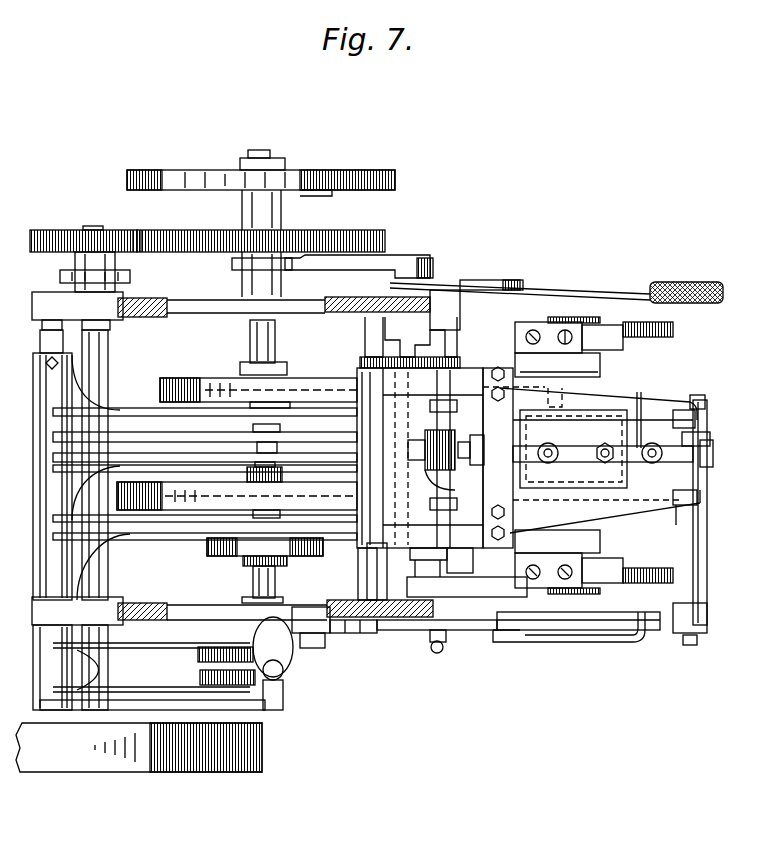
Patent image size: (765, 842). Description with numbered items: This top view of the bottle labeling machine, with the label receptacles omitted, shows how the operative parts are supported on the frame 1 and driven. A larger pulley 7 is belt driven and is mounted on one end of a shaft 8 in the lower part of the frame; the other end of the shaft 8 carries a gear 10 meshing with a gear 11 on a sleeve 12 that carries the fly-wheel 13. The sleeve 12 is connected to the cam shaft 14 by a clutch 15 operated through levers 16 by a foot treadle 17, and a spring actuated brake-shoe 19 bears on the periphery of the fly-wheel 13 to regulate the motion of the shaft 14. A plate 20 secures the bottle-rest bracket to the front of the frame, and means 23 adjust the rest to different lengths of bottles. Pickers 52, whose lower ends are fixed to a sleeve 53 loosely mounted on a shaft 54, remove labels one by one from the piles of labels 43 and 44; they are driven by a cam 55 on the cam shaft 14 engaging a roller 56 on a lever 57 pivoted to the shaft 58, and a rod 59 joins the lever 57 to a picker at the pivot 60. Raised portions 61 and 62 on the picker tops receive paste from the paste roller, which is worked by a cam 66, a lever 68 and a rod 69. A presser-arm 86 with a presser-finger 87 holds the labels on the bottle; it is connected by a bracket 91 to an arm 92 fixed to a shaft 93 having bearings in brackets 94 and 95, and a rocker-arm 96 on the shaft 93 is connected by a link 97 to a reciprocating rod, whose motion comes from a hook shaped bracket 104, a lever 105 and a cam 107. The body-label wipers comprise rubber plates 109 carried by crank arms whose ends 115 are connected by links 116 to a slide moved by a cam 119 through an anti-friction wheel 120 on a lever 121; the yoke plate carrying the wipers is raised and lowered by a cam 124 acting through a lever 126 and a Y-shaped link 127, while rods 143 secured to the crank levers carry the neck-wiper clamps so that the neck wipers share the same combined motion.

The frame 1 is at (185, 312).
The larger pulley 7 is at (157, 765).
The shaft 8 is at (104, 345).
The gear 10 is at (60, 230).
The gear 11 is at (176, 230).
The sleeve 12 is at (245, 243).
The fly-wheel 13 is at (360, 170).
The shaft 14 is at (274, 343).
The clutch 15 is at (245, 282).
The levers 16 is at (377, 266).
The foot treadle 17 is at (672, 281).
The brake-shoe 19 is at (318, 190).
The plate 20 is at (455, 333).
The means for adjusting the rest 23 is at (478, 445).
The pile of labels 43 is at (522, 453).
The pile of labels 44 is at (690, 407).
The pickers 52 is at (645, 522).
The sleeve 53 is at (358, 544).
The shaft 54 is at (368, 580).
The cam 55 is at (207, 548).
The roller 56 is at (253, 571).
The lever 57 is at (158, 534).
The shaft 58 is at (40, 345).
The rod 59 is at (470, 583).
The pivot 60 is at (463, 572).
The raised portion 61 is at (600, 416).
The raised portion 62 is at (698, 418).
The cam 66 is at (198, 660).
The lever 68 is at (151, 667).
The rod 69 is at (438, 654).
The presser-arm 86 is at (642, 395).
The presser-finger 87 is at (520, 453).
The bracket 91 is at (713, 451).
The arm 92 is at (707, 528).
The shaft 93 is at (405, 631).
The bracket 94 is at (585, 642).
The bracket 95 is at (360, 634).
The rocker-arm 96 is at (322, 652).
The link 97 is at (285, 680).
The hook shaped bracket 104 is at (272, 702).
The lever 105 is at (180, 700).
The cam 107 is at (200, 680).
The rubber plates 109 is at (570, 365).
The crank arm ends 115 is at (443, 406).
The links 116 is at (450, 468).
The cam 119 is at (210, 380).
The anti-friction wheel 120 is at (247, 408).
The lever 121 is at (143, 412).
The cam 124 is at (207, 492).
The lever 126 is at (197, 458).
The Y-shaped link 127 is at (284, 482).
The rods 143 is at (658, 334).